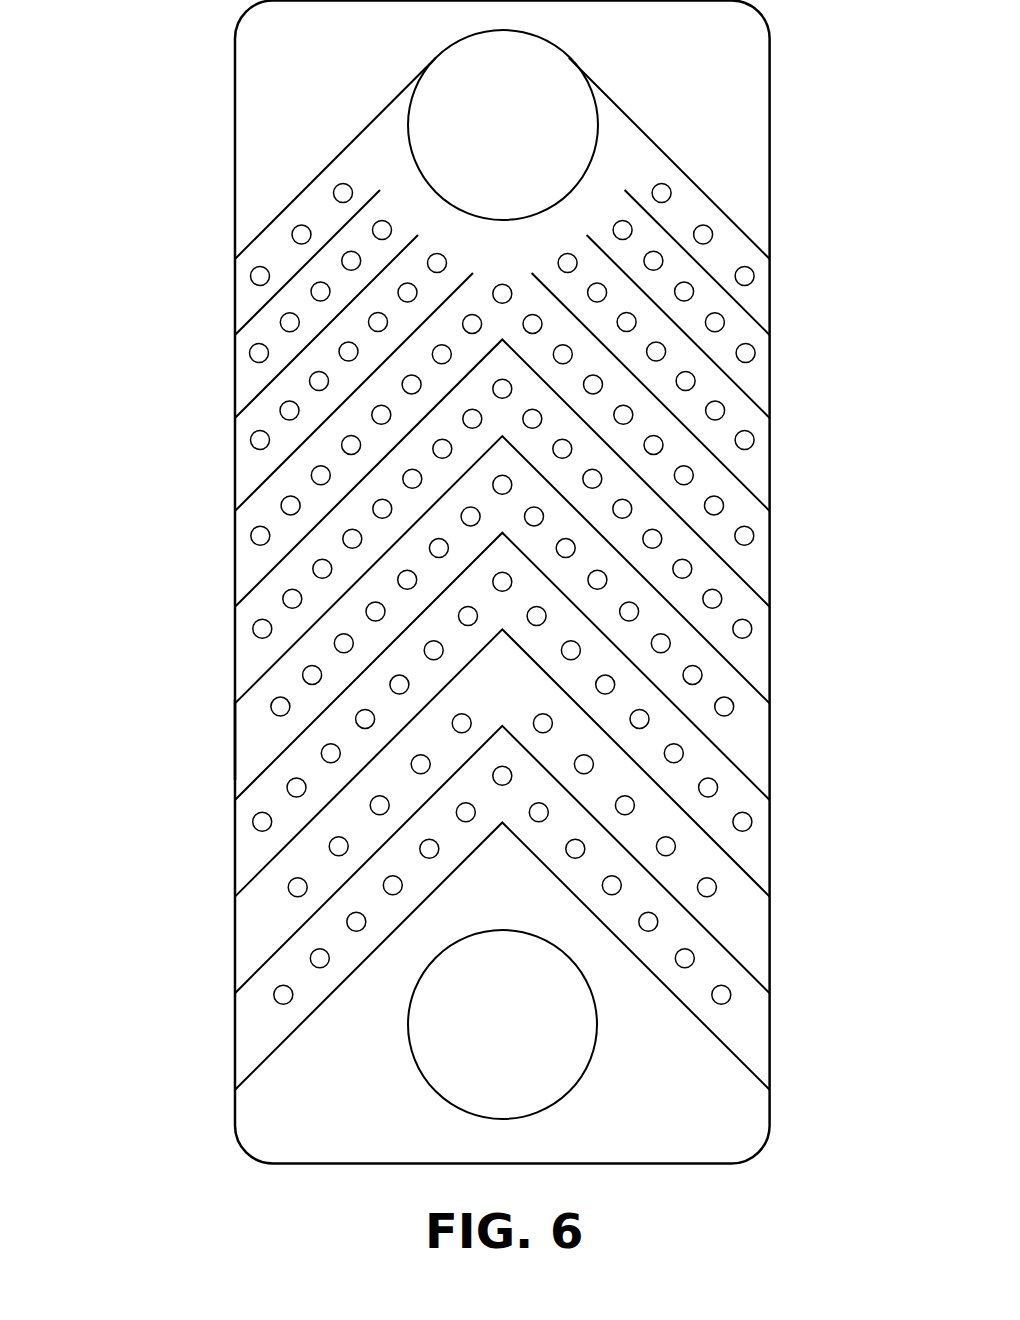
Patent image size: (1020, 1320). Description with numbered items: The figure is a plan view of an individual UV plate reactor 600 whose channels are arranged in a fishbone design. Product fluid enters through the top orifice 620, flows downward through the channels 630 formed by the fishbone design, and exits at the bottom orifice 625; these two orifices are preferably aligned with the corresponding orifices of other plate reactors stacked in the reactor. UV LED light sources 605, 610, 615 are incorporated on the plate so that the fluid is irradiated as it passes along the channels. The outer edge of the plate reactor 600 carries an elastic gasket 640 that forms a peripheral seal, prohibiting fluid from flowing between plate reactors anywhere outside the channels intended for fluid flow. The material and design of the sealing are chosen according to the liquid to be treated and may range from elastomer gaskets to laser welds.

The plate reactor 600 is at (103, 123).
The UV LED light source 605 is at (343, 538).
The UV LED light source 610 is at (713, 235).
The UV LED light source 615 is at (755, 818).
The top orifice 620 is at (410, 167).
The bottom orifice 625 is at (598, 1037).
The channel 630 is at (506, 254).
The elastic gasket 640 is at (235, 733).